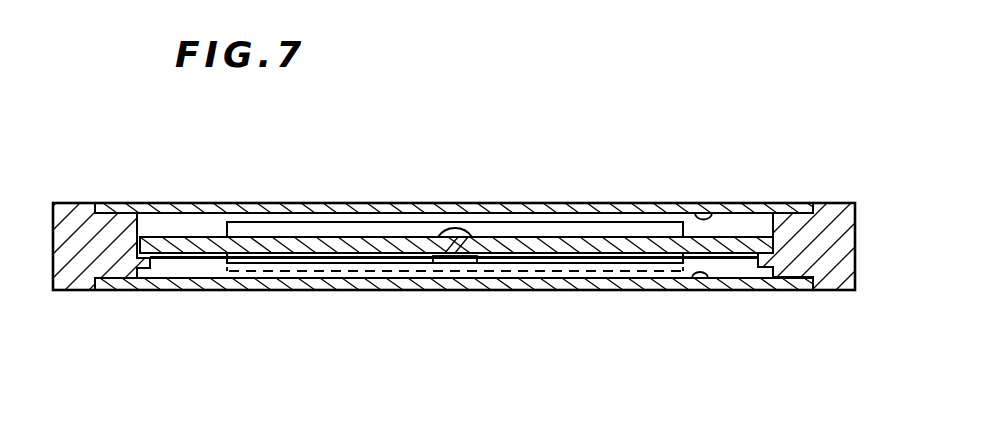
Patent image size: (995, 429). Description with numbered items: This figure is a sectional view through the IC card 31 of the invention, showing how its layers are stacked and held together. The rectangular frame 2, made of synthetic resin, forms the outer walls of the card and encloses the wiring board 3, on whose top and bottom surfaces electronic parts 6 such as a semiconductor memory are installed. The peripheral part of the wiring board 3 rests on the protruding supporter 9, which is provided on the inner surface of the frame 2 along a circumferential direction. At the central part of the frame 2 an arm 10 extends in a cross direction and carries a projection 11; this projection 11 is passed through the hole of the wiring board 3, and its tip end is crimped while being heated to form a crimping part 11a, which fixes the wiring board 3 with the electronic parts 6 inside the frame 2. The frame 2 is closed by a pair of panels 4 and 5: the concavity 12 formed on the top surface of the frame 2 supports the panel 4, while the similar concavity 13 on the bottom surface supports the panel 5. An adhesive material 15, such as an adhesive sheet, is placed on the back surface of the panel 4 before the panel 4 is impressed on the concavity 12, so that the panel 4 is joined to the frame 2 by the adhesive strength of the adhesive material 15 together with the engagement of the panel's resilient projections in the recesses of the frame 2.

The frame 2 is at (840, 252).
The wiring board 3 is at (600, 245).
The panel 4 is at (273, 203).
The panel 5 is at (338, 284).
The electronic parts 6 is at (534, 222).
The protruding supporter 9 is at (762, 278).
The arm 10 is at (198, 270).
The projection 11 is at (455, 263).
The crimping part 11a is at (457, 235).
The concavity 12 is at (780, 213).
The concavity 13 is at (800, 290).
The adhesive material 15 is at (706, 213).
The IC card 31 is at (817, 172).